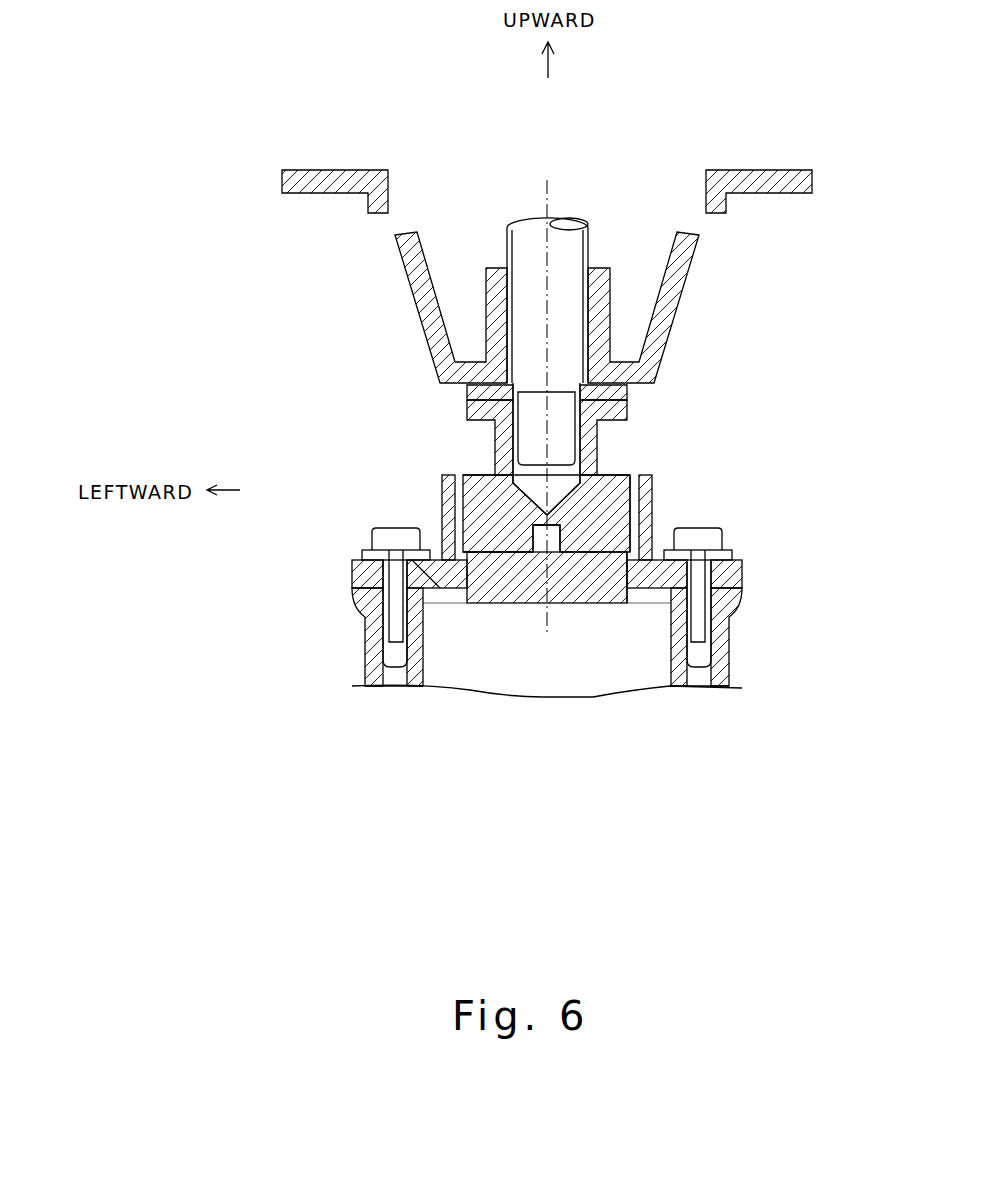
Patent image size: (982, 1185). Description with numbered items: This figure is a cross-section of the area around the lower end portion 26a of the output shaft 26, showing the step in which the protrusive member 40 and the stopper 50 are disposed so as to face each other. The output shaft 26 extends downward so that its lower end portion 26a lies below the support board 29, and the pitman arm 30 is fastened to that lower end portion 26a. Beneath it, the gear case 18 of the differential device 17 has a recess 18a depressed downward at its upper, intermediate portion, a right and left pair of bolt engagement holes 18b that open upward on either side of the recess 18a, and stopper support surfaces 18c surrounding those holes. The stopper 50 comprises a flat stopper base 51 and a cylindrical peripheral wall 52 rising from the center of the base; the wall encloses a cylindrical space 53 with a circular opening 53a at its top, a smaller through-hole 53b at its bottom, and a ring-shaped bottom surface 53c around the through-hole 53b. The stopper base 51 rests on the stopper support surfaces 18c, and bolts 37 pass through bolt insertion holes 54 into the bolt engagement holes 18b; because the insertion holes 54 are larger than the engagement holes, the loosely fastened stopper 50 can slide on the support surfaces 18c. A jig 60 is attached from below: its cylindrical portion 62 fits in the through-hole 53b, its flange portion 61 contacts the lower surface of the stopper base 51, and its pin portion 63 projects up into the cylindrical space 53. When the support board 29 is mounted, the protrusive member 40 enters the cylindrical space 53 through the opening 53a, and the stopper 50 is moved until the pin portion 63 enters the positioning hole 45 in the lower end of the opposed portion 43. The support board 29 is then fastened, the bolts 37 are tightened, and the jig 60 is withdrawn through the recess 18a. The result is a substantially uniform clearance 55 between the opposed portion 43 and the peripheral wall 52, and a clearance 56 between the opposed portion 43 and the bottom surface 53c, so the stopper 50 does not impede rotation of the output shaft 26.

The differential device 17 is at (390, 673).
The gear case 18 is at (544, 672).
The recess 18a is at (503, 643).
The bolt engagement holes 18b is at (367, 643).
The stopper support surfaces 18c is at (352, 582).
The output shaft 26 is at (585, 222).
The lower end portion 26a is at (532, 240).
The support board 29 is at (370, 172).
The pitman arm 30 is at (693, 316).
The bolts 37 is at (372, 543).
The protrusive member 40 is at (470, 453).
The opposed portion 43 is at (655, 505).
The positioning hole 45 is at (457, 409).
The stopper 50 is at (533, 439).
The stopper base 51 is at (650, 548).
The peripheral wall 52 is at (442, 500).
The cylindrical space 53 is at (655, 520).
The circular opening 53a is at (633, 465).
The through-hole 53b is at (510, 557).
The ring-shaped bottom surface 53c is at (660, 532).
The bolt insertion holes 54 is at (362, 556).
The clearance 55 is at (440, 513).
The clearance 56 is at (470, 557).
The jig 60 is at (560, 679).
The flange portion 61 is at (613, 603).
The cylindrical portion 62 is at (593, 557).
The pin portion 63 is at (545, 530).